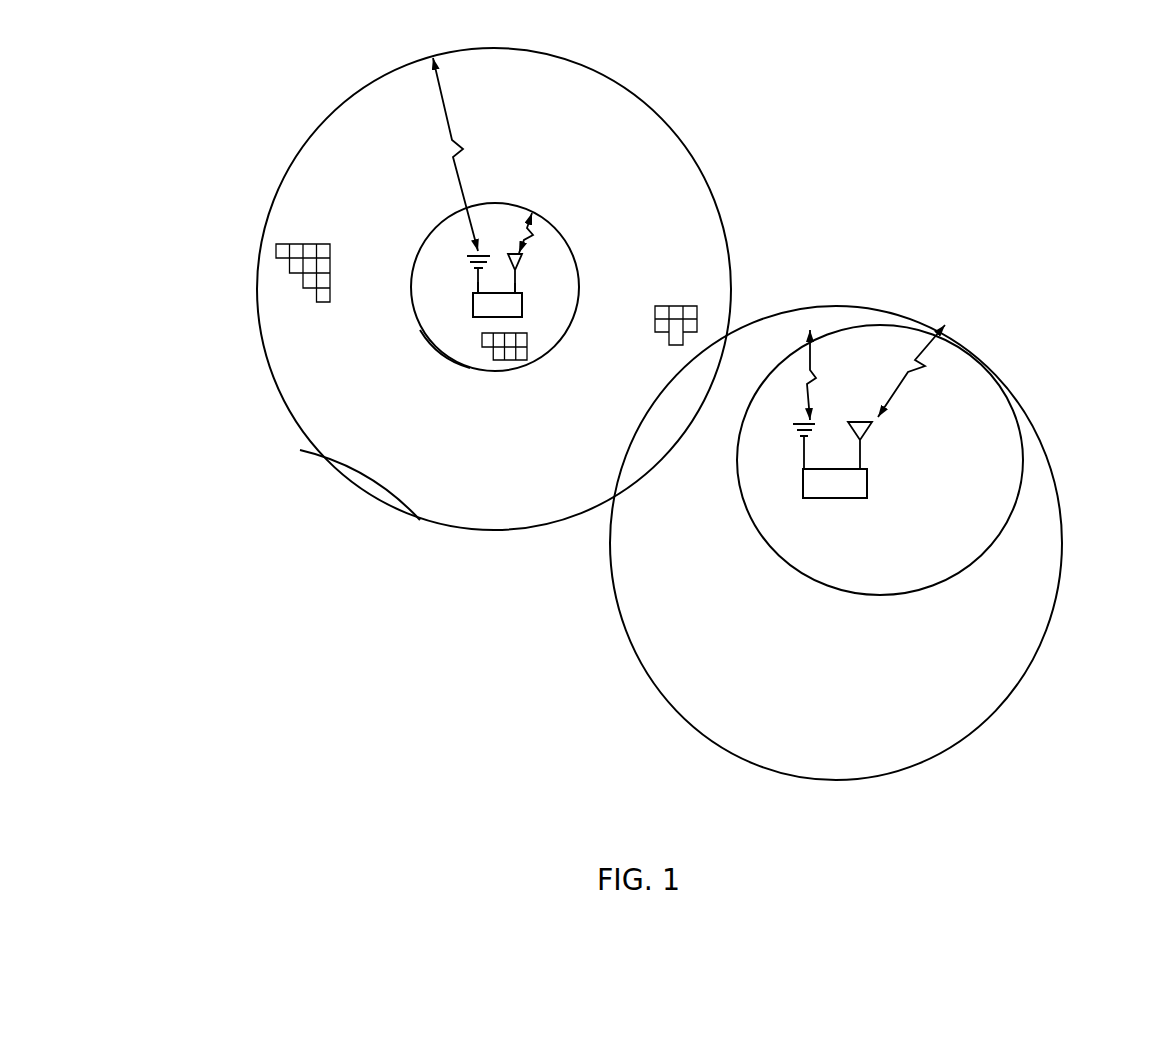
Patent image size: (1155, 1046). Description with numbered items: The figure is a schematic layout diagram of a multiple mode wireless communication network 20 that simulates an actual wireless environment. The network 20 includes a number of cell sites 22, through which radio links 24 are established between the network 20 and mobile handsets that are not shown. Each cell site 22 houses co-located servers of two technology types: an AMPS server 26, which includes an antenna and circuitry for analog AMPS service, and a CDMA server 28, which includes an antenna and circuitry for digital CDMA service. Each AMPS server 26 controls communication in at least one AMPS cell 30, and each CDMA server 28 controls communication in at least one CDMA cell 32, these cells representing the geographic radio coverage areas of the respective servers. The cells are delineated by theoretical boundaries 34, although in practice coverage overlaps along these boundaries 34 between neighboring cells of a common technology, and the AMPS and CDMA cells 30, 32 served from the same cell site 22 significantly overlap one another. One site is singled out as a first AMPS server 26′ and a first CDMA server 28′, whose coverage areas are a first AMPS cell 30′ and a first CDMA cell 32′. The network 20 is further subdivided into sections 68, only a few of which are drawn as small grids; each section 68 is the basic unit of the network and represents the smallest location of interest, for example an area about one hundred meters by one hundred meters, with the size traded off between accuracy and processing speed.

The multiple mode wireless communication network 20 is at (1077, 839).
The cell site 22 is at (473, 306).
The radio link 24 is at (447, 131).
The AMPS server 26 is at (714, 361).
The first AMPS server 26′ is at (571, 307).
The CDMA server 28 is at (594, 361).
The first CDMA server 28′ is at (418, 301).
The AMPS cell 30 is at (732, 399).
The first AMPS cell 30′ is at (434, 362).
The CDMA cell 32 is at (646, 438).
The first CDMA cell 32′ is at (347, 490).
The theoretical boundary 34 is at (702, 165).
The section 68 is at (329, 281).